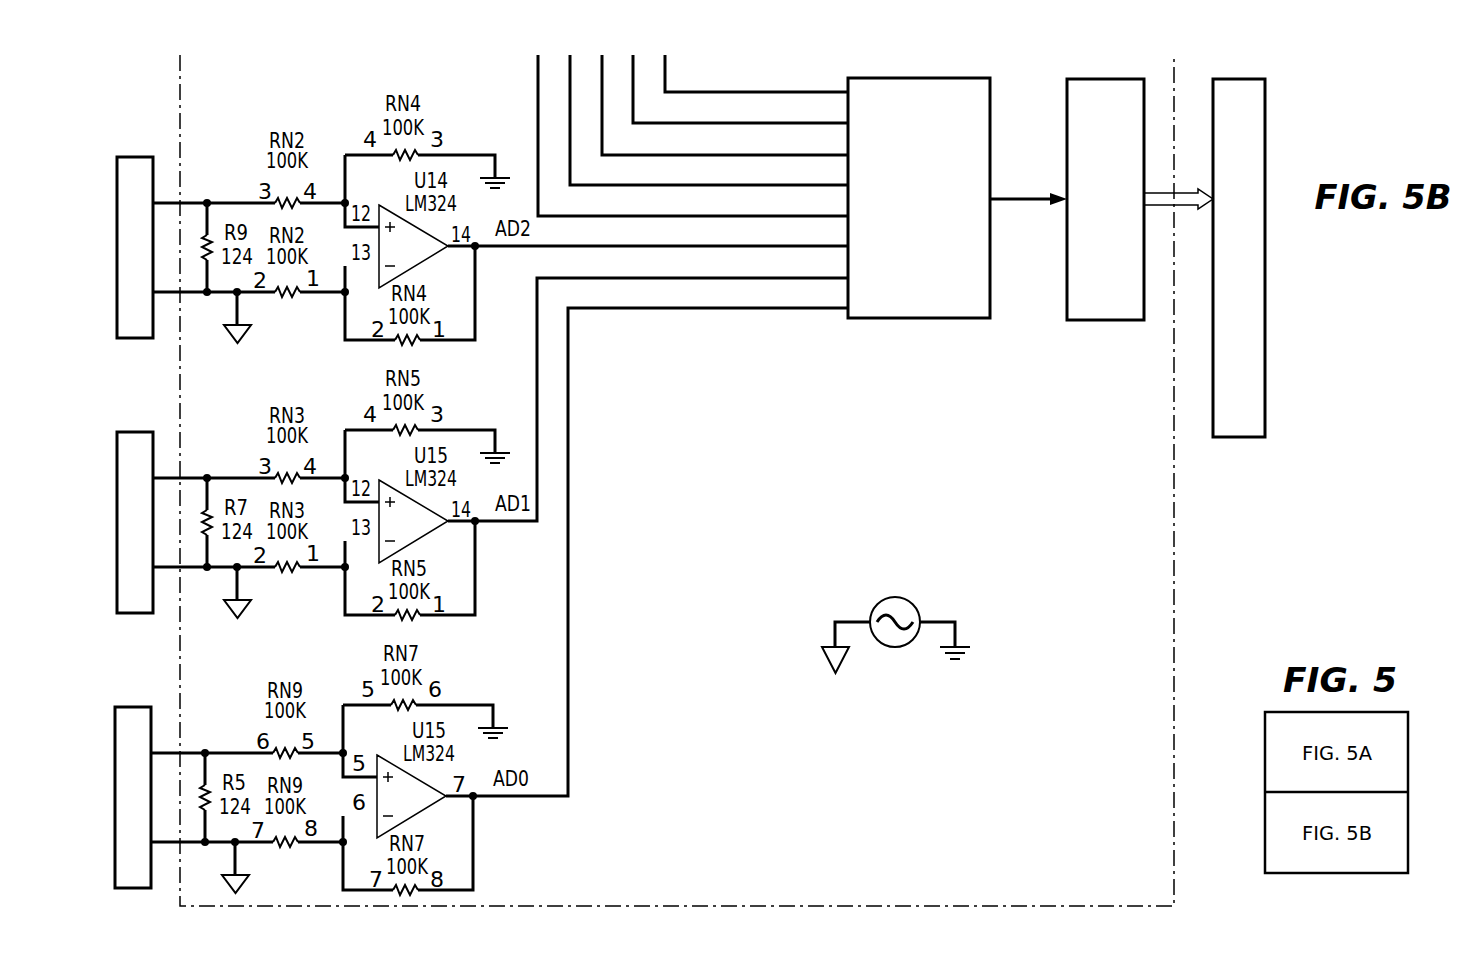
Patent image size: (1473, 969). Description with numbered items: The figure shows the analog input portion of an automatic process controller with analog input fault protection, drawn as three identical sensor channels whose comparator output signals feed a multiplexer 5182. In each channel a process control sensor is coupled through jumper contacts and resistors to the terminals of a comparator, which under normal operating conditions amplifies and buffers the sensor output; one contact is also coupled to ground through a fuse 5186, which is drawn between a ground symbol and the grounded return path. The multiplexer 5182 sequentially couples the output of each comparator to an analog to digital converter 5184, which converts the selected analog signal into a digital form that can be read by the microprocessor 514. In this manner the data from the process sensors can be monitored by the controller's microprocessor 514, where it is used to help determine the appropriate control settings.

The microprocessor 514 is at (1265, 130).
The multiplexer 5182 is at (908, 318).
The analog to digital converter 5184 is at (1098, 320).
The fuse 5186 is at (895, 597).